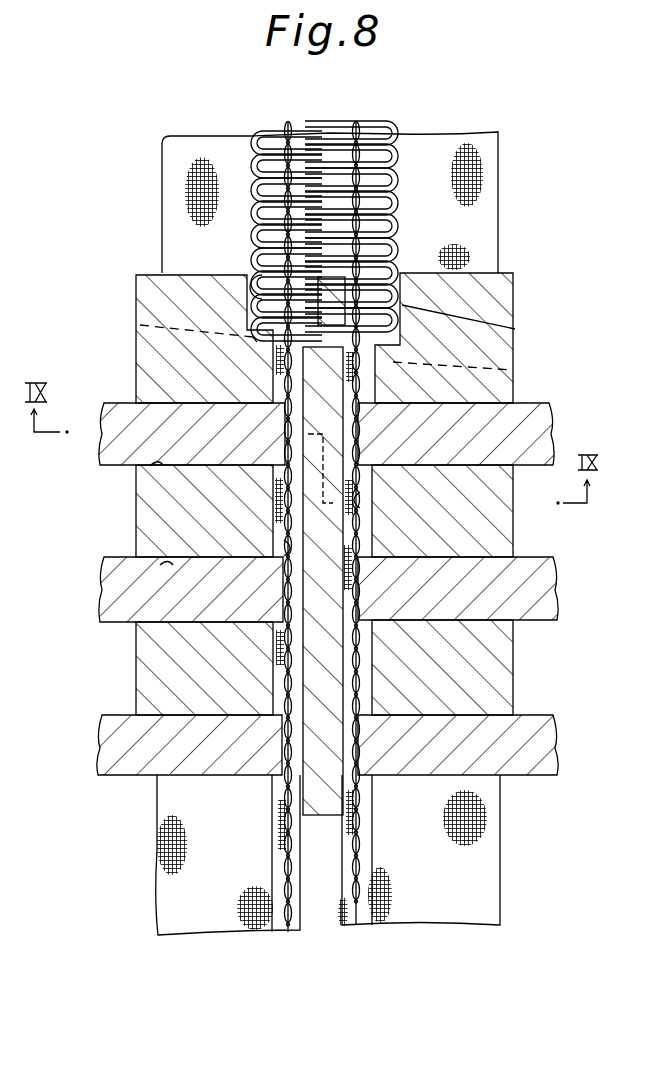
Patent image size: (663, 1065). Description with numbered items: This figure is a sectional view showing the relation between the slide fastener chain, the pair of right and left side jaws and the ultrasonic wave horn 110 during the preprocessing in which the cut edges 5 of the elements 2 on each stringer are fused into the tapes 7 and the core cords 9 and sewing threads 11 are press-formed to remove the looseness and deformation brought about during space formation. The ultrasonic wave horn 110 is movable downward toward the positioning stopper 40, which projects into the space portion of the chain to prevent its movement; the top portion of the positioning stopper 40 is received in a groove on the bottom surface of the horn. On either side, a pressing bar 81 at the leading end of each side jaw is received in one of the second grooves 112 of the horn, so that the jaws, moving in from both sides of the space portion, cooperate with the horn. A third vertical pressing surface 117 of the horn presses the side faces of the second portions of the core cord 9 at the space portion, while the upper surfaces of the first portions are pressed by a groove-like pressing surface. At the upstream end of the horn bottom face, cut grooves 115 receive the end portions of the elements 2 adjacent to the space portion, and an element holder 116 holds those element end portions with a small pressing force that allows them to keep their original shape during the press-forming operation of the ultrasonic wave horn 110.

The tape 7 is at (222, 255).
The element holder 116 is at (285, 270).
The element 2 is at (392, 284).
The cut edge 5 is at (145, 328).
The cut groove 115 is at (513, 330).
The pressing bar 81 is at (533, 408).
The second groove 112 is at (157, 462).
The third vertical pressing surface 117 is at (338, 535).
The positioning stopper 40 is at (305, 673).
The ultrasonic wave horn 110 is at (513, 680).
The core cord 9 is at (270, 812).
The sewing thread 11 is at (283, 852).